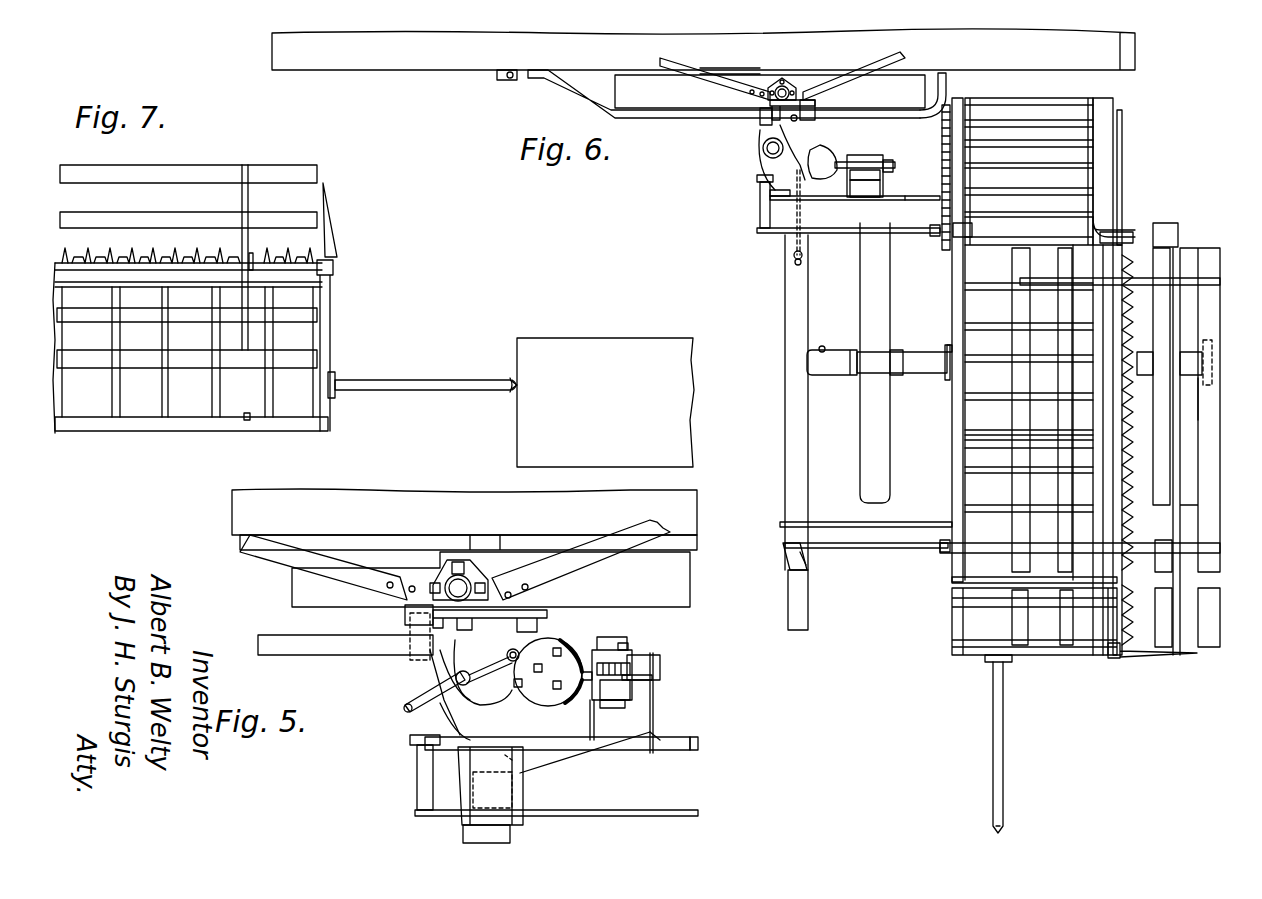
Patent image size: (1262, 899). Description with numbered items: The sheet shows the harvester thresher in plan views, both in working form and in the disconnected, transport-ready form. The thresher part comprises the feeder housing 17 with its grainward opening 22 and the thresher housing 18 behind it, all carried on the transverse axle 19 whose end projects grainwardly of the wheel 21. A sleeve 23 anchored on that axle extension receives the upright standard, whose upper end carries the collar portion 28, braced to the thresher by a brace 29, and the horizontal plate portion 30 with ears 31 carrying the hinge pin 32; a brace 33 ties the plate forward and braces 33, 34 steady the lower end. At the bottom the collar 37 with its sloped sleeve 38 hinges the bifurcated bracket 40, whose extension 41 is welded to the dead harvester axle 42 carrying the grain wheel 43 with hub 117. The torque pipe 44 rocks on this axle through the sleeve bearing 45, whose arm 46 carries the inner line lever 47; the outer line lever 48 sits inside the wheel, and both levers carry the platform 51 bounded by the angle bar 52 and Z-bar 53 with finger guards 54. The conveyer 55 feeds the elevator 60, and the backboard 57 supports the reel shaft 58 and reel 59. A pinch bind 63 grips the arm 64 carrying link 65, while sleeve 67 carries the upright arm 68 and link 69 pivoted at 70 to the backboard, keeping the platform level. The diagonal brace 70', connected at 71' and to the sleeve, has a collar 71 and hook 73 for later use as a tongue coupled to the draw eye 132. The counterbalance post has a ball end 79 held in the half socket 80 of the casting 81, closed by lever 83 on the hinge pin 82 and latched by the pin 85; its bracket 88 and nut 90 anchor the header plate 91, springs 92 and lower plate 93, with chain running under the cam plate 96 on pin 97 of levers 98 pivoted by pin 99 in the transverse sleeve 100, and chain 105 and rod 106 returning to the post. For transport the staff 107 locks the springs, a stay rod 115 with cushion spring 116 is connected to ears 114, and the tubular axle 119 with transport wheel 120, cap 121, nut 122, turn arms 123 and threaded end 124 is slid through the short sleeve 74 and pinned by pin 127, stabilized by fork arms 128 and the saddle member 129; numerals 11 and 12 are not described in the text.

In FIG. 6, the bucket support post 11 is at (785, 298).
In FIG. 6, the lower post 12 is at (808, 590).
In FIG. 5, the feeder housing 17 is at (690, 745).
In FIG. 6, the feeder housing 17 is at (1126, 70).
In FIG. 7, the thresher housing 18 is at (606, 346).
In FIG. 6, the thresher housing 18 is at (401, 58).
In FIG. 5, the transverse axle 19 is at (432, 545).
In FIG. 6, the transverse axle 19 is at (762, 72).
In FIG. 6, the wheel 21 is at (658, 108).
In FIG. 6, the opening 22 is at (1058, 70).
In FIG. 5, the sleeve 23 is at (406, 616).
In FIG. 6, the sleeve 23 is at (760, 118).
In FIG. 5, the collar portion 28 is at (468, 570).
In FIG. 6, the collar portion 28 is at (795, 80).
In FIG. 5, the brace 29 is at (262, 553).
In FIG. 6, the brace 29 is at (700, 72).
In FIG. 5, the plate portion 30 is at (502, 568).
In FIG. 6, the plate portion 30 is at (854, 76).
In FIG. 5, the ears 31 is at (520, 650).
In FIG. 6, the ears 31 is at (820, 105).
In FIG. 5, the hinge pin 32 is at (550, 615).
In FIG. 6, the hinge pin 32 is at (830, 106).
In FIG. 5, the brace 33 is at (268, 645).
In FIG. 6, the brace 33 is at (572, 92).
In FIG. 6, the brace 34 is at (942, 73).
In FIG. 6, the collar 37 is at (768, 152).
In FIG. 6, the sleeve 38 is at (763, 145).
In FIG. 5, the bifurcated bracket 40 is at (440, 708).
In FIG. 6, the bifurcated bracket 40 is at (797, 168).
In FIG. 5, the extension 41 is at (514, 758).
In FIG. 5, the harvester axle 42 is at (512, 836).
In FIG. 6, the grain wheel 43 is at (860, 420).
In FIG. 5, the torque pipe 44 is at (523, 800).
In FIG. 5, the sleeve bearing 45 is at (450, 780).
In FIG. 6, the sleeve bearing 45 is at (810, 216).
In FIG. 5, the arm 46 is at (630, 755).
In FIG. 6, the arm 46 is at (892, 201).
In FIG. 6, the inner line lever 47 is at (928, 205).
In FIG. 6, the outer line lever 48 is at (930, 522).
In FIG. 7, the harvester platform 51 is at (330, 308).
In FIG. 6, the harvester platform 51 is at (1068, 657).
In FIG. 7, the rear transverse angle bar 52 is at (282, 425).
In FIG. 6, the rear transverse angle bar 52 is at (965, 422).
In FIG. 7, the front transverse Z-bar 53 is at (184, 285).
In FIG. 6, the front transverse Z-bar 53 is at (1110, 647).
In FIG. 7, the finger guards 54 is at (265, 268).
In FIG. 6, the finger guards 54 is at (1115, 517).
In FIG. 7, the conveyer 55 is at (305, 298).
In FIG. 6, the conveyer 55 is at (1045, 637).
In FIG. 7, the backboard 57 is at (247, 420).
In FIG. 6, the backboard 57 is at (965, 447).
In FIG. 7, the reel shaft 58 is at (323, 248).
In FIG. 7, the harvester reel 59 is at (305, 172).
In FIG. 6, the harvester reel 59 is at (1210, 505).
In FIG. 6, the elevator 60 is at (1080, 158).
In FIG. 5, the pinch bind 63 is at (412, 738).
In FIG. 6, the pinch bind 63 is at (757, 178).
In FIG. 5, the arm 64 is at (418, 772).
In FIG. 6, the arm 64 is at (760, 215).
In FIG. 5, the link 65 is at (418, 813).
In FIG. 6, the link 65 is at (820, 235).
In FIG. 6, the sleeve 67 is at (808, 566).
In FIG. 6, the upright arm 68 is at (785, 562).
In FIG. 6, the link 69 is at (865, 548).
In FIG. 6, the pivot 70 is at (926, 567).
In FIG. 7, the diagonal brace bar 70' is at (426, 370).
In FIG. 6, the diagonal brace bar 70' is at (975, 747).
In FIG. 7, the collar 71 is at (351, 371).
In FIG. 6, the collar 71 is at (985, 670).
In FIG. 6, the thresher connection 71' is at (496, 85).
In FIG. 7, the hook 73 is at (508, 380).
In FIG. 6, the hook 73 is at (995, 834).
In FIG. 6, the short sleeve 74 is at (830, 375).
In FIG. 5, the upper ball end 79 is at (495, 698).
In FIG. 6, the upper ball end 79 is at (757, 192).
In FIG. 5, the half ball socket 80 is at (456, 678).
In FIG. 6, the half ball socket 80 is at (800, 100).
In FIG. 5, the casting 81 is at (520, 640).
In FIG. 6, the casting 81 is at (825, 110).
In FIG. 5, the vertical hinge pin 82 is at (585, 668).
In FIG. 5, the lever 83 is at (403, 705).
In FIG. 5, the removable pin 85 is at (438, 706).
In FIG. 6, the bracket 88 is at (875, 152).
In FIG. 6, the nut 90 is at (882, 174).
In FIG. 6, the header plate 91 is at (882, 188).
In FIG. 5, the tensioned springs 92 is at (592, 708).
In FIG. 5, the lower header plate 93 is at (620, 650).
In FIG. 5, the cam plate 96 is at (660, 662).
In FIG. 5, the pin 97 is at (640, 712).
In FIG. 5, the upright levers 98 is at (625, 640).
In FIG. 5, the pin 99 is at (615, 705).
In FIG. 5, the transverse sleeve 100 is at (630, 688).
In FIG. 5, the chain 105 is at (652, 677).
In FIG. 5, the rod 106 is at (628, 647).
In FIG. 6, the staff 107 is at (895, 160).
In FIG. 6, the ears 114 is at (795, 262).
In FIG. 6, the stay rod 115 is at (770, 196).
In FIG. 6, the cushion spring insert 116 is at (795, 238).
In FIG. 6, the hub 117 is at (897, 352).
In FIG. 6, the tubular axle 119 is at (930, 345).
In FIG. 6, the transport wheel 120 is at (1168, 228).
In FIG. 6, the cap 121 is at (1198, 345).
In FIG. 6, the nut 122 is at (1210, 422).
In FIG. 6, the turn arms 123 is at (1208, 355).
In FIG. 6, the threaded end 124 is at (1210, 362).
In FIG. 6, the pin 127 is at (822, 348).
In FIG. 6, the fork arms 128 is at (1133, 320).
In FIG. 6, the saddle member 129 is at (947, 378).
In FIG. 7, the draw eye 132 is at (510, 392).